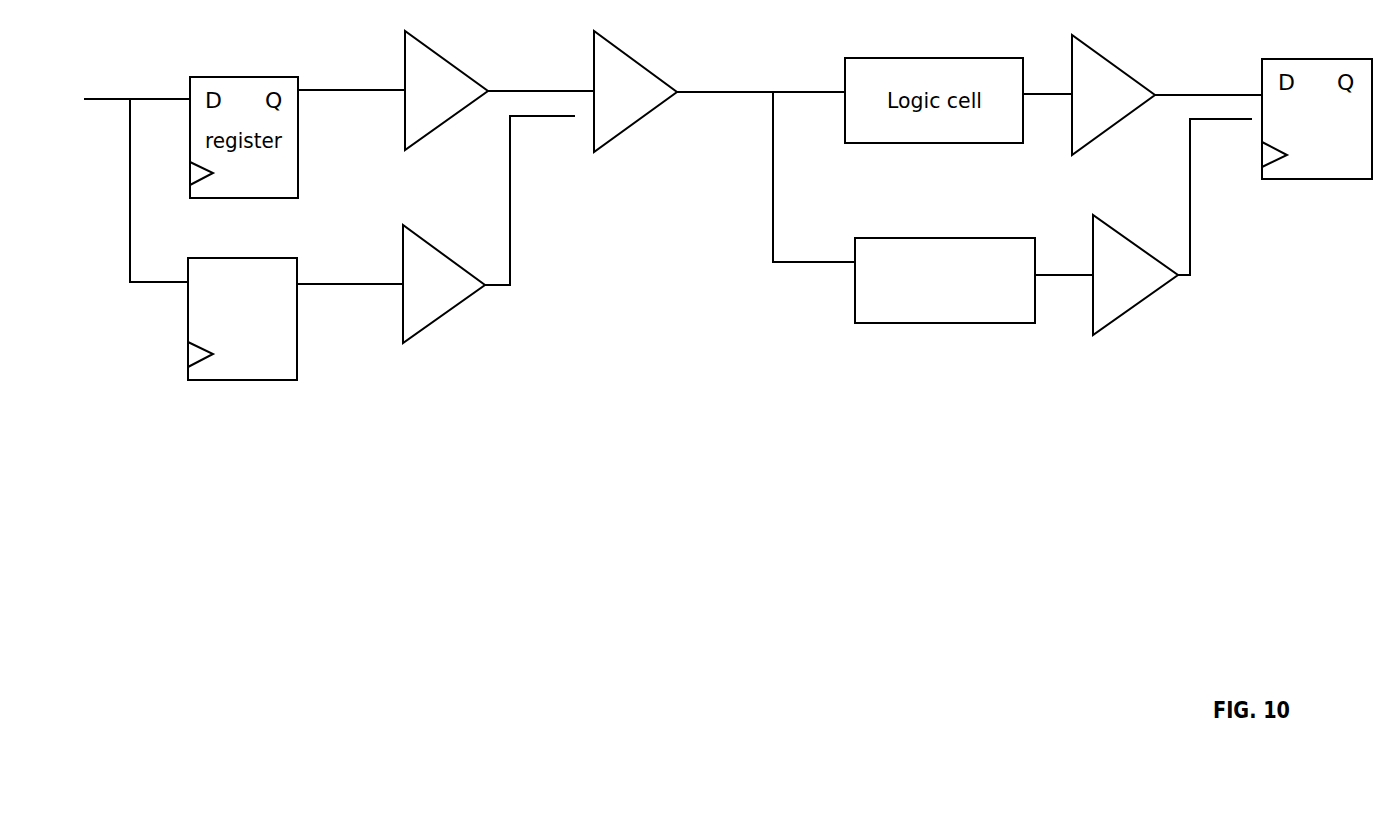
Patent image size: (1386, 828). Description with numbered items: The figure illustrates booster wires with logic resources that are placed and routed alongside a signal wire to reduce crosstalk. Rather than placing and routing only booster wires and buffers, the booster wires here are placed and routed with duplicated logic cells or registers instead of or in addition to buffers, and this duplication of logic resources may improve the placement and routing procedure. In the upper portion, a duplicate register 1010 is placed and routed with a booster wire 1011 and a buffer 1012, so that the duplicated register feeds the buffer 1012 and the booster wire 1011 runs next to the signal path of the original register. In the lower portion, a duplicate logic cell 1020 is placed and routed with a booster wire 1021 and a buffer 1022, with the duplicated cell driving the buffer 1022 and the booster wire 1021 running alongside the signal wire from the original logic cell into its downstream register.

The duplicate register 1010 is at (252, 356).
The booster wire 1011 is at (560, 116).
The buffer 1012 is at (454, 302).
The duplicate logic cell 1020 is at (931, 313).
The booster wire 1021 is at (1240, 119).
The buffer 1022 is at (1122, 296).